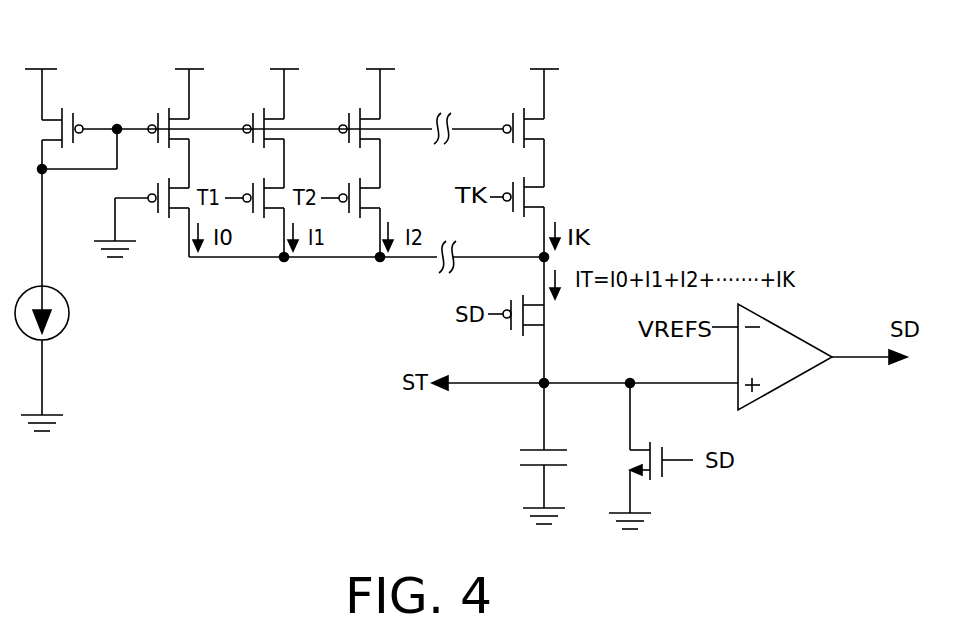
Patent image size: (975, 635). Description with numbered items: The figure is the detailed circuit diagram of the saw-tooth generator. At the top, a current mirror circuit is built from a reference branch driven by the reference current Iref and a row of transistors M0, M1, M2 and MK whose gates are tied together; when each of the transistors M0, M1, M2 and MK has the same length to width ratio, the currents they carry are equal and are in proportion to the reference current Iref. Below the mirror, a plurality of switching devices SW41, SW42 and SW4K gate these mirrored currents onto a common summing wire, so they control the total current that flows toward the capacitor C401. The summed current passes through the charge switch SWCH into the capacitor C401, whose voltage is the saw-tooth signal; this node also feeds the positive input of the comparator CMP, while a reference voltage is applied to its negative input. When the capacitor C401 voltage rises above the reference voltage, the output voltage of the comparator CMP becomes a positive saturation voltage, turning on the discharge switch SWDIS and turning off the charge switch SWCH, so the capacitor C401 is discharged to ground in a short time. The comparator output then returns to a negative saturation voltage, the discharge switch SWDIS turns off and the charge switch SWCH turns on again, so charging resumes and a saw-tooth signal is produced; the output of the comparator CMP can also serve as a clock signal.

The transistor M0 is at (158, 112).
The transistor M1 is at (252, 112).
The transistor M2 is at (348, 112).
The transistor MK is at (512, 110).
The switching device SW41 is at (272, 202).
The switching device SW42 is at (368, 202).
The switching device SW4K is at (557, 214).
The charge switch SWCH is at (557, 315).
The discharge switch SWDIS is at (644, 456).
The capacitor C401 is at (515, 486).
The comparator CMP is at (792, 372).
The reference current Iref is at (71, 358).